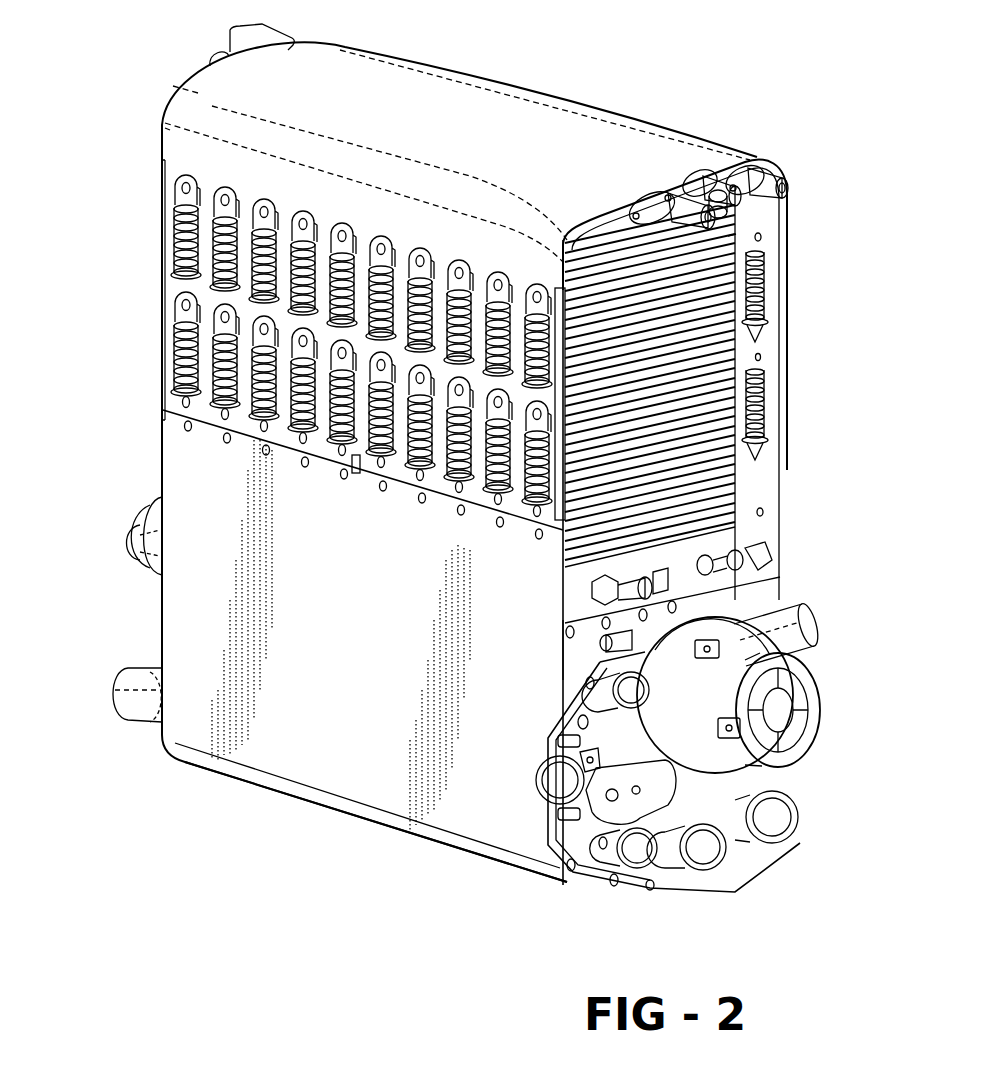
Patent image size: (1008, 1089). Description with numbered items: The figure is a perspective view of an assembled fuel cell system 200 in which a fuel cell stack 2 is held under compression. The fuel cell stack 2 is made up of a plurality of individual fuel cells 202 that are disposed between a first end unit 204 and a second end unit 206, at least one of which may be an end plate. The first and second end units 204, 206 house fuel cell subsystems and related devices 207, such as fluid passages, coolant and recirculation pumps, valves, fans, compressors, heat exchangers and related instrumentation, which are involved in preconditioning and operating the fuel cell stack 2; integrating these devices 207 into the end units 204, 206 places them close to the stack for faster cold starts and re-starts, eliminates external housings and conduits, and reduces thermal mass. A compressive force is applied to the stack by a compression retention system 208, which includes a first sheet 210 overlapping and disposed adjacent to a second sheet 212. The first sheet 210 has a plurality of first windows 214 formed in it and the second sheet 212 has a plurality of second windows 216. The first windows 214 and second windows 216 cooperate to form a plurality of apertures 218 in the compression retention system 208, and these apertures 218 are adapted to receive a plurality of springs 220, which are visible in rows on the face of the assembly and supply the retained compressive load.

The fuel cell stack 2 is at (727, 237).
The fuel cell system 200 is at (690, 120).
The individual fuel cells 202 is at (715, 285).
The first end unit 204 is at (465, 100).
The second end unit 206 is at (470, 845).
The fuel cell subsystems and related devices 207 is at (760, 175).
The compression retention system 208 is at (107, 262).
The first sheet 210 is at (186, 148).
The second sheet 212 is at (175, 465).
The first windows 214 is at (265, 200).
The second windows 216 is at (767, 268).
The apertures 218 is at (215, 372).
The springs 220 is at (345, 458).